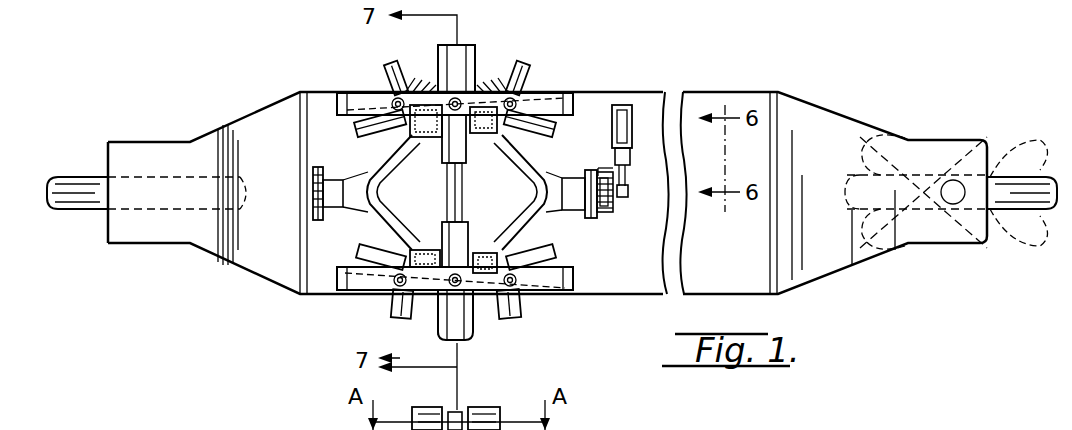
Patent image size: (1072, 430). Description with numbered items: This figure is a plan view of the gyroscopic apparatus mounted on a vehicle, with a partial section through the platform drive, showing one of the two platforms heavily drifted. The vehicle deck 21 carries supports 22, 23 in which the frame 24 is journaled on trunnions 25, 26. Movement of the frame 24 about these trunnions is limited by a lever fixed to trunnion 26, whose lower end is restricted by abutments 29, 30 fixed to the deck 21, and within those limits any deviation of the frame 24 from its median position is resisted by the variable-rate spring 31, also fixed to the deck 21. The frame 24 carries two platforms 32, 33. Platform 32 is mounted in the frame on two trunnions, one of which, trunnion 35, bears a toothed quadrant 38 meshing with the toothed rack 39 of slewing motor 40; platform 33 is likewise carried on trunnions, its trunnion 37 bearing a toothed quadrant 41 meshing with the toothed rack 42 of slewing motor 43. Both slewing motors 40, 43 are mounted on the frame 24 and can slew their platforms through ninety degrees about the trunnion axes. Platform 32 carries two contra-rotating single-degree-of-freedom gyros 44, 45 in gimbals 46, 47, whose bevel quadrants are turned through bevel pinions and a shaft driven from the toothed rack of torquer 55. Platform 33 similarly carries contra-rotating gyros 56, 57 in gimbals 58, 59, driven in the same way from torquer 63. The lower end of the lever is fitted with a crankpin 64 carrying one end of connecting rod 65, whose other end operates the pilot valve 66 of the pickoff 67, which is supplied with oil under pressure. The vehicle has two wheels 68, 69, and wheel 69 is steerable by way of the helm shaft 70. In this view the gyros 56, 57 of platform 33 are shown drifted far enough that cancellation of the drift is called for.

The vehicle deck 21 is at (608, 91).
The support 22 is at (313, 168).
The support 23 is at (588, 170).
The frame 24 is at (385, 158).
The trunnion 25 is at (313, 190).
The trunnion 26 is at (608, 205).
The abutment 29 is at (603, 212).
The abutment 30 is at (600, 168).
The variable-rate spring 31 is at (462, 182).
The platform 32 is at (337, 268).
The platform 33 is at (337, 95).
The trunnion 35 is at (472, 296).
The trunnion 37 is at (462, 95).
The toothed quadrant 38 is at (440, 310).
The toothed rack 39 is at (430, 290).
The slewing motor 40 is at (420, 250).
The toothed quadrant 41 is at (447, 95).
The toothed rack 42 is at (432, 105).
The slewing motor 43 is at (418, 137).
The gyro 44 is at (358, 295).
The gyro 45 is at (560, 294).
The gimbal 46 is at (390, 257).
The gimbal 47 is at (520, 306).
The torquer 55 is at (468, 232).
The gyro 56 is at (345, 120).
The gyro 57 is at (556, 126).
The gimbal 58 is at (388, 75).
The gimbal 59 is at (520, 70).
The torquer 63 is at (476, 47).
The crankpin 64 is at (629, 193).
The connecting rod 65 is at (626, 172).
The pilot valve 66 is at (631, 151).
The pickoff 67 is at (630, 105).
The wheel 68 is at (60, 177).
The wheel 69 is at (1000, 178).
The helm shaft 70 is at (953, 180).